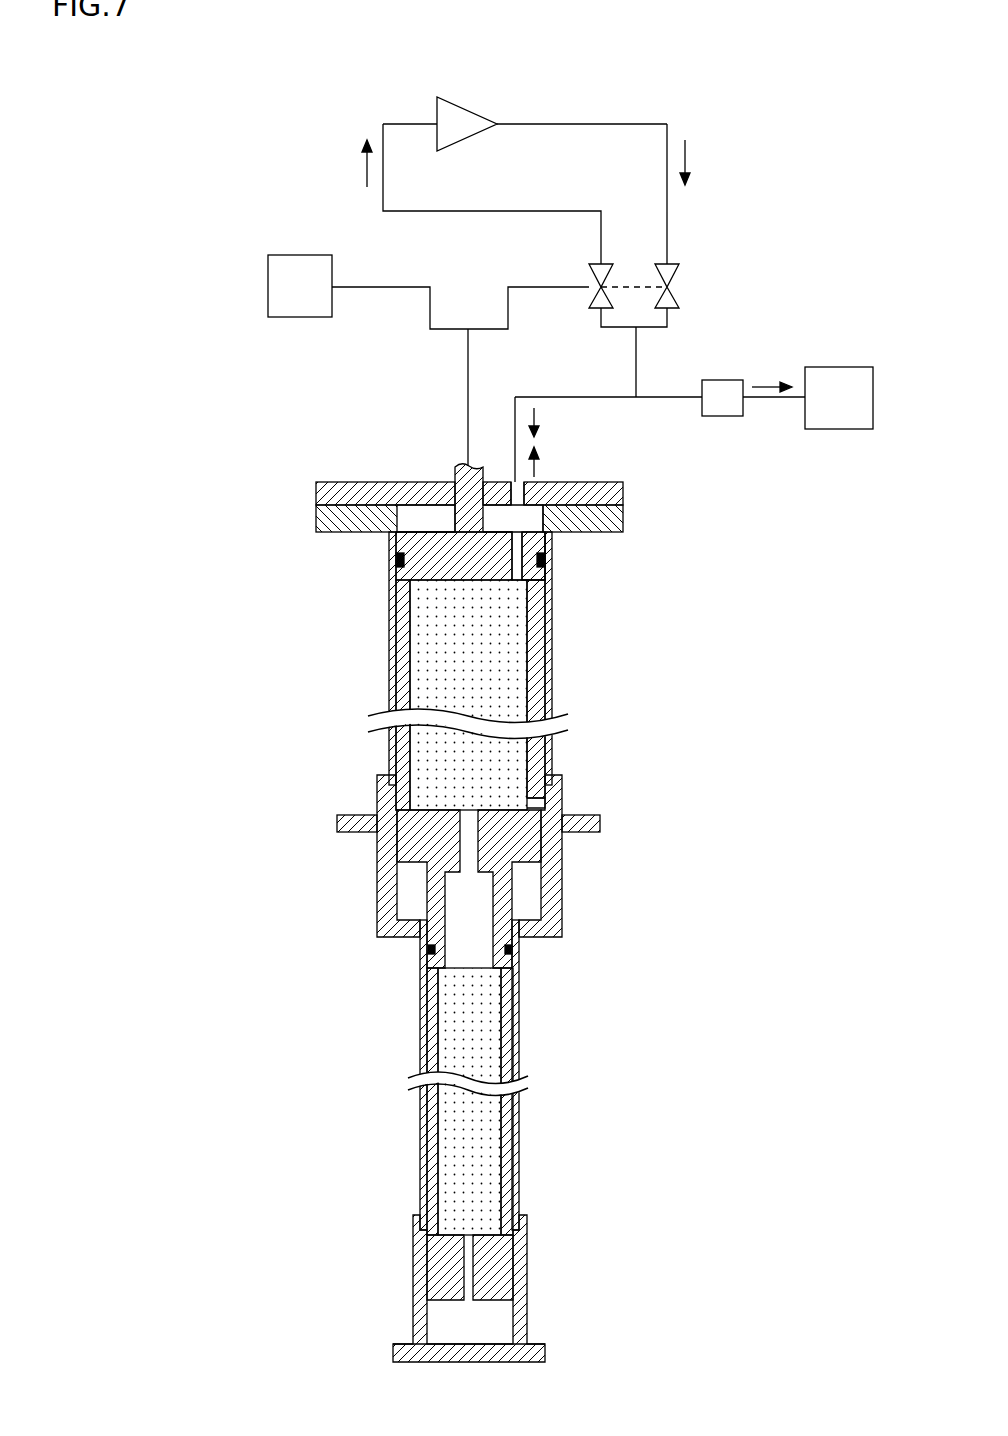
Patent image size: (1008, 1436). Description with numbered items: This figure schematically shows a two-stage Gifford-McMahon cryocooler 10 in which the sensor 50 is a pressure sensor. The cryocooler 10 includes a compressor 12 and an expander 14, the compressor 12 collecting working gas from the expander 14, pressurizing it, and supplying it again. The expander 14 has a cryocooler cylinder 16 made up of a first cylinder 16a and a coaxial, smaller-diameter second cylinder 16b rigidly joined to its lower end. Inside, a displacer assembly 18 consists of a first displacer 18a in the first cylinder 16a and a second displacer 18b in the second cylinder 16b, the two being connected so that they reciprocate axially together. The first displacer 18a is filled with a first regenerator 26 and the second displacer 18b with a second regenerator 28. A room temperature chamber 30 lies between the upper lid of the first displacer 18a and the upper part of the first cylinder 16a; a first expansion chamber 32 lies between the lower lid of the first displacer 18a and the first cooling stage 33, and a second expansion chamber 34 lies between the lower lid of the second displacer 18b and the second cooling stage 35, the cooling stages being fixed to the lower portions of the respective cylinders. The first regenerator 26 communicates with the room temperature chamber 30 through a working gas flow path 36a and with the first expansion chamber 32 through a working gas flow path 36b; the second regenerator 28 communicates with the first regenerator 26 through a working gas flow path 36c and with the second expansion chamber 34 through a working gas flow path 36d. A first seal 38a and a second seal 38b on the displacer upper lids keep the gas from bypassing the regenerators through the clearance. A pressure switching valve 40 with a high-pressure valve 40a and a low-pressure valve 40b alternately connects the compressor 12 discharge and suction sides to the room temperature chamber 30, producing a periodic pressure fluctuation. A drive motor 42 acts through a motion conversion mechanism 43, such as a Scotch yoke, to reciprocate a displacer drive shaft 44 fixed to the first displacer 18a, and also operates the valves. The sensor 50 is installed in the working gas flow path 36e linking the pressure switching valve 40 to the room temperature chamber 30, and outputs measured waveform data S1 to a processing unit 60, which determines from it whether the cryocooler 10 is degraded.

The cryocooler 10 is at (173, 103).
The compressor 12 is at (463, 102).
The expander 14 is at (303, 455).
The cryocooler cylinder 16 is at (425, 600).
The first cylinder 16a is at (392, 636).
The second cylinder 16b is at (420, 1150).
The displacer assembly 18 is at (519, 613).
The first displacer 18a is at (535, 640).
The second displacer 18b is at (525, 998).
The first regenerator 26 is at (497, 680).
The second regenerator 28 is at (475, 1032).
The room temperature chamber 30 is at (610, 521).
The first expansion chamber 32 is at (525, 897).
The first cooling stage 33 is at (565, 780).
The second expansion chamber 34 is at (500, 1322).
The second cooling stage 35 is at (525, 1255).
The working gas flow path 36a is at (518, 570).
The working gas flow path 36b is at (537, 804).
The working gas flow path 36c is at (468, 818).
The working gas flow path 36d is at (468, 1270).
The working gas flow path 36e is at (637, 350).
The first seal 38a is at (396, 560).
The second seal 38b is at (428, 950).
The pressure switching valve 40 is at (657, 234).
The high-pressure valve 40a is at (690, 261).
The low-pressure valve 40b is at (605, 263).
The drive motor 42 is at (300, 255).
The motion conversion mechanism 43 is at (450, 329).
The displacer drive shaft 44 is at (476, 515).
The sensor 50 is at (723, 418).
The processing unit 60 is at (840, 430).
The measured waveform data S1 is at (768, 382).